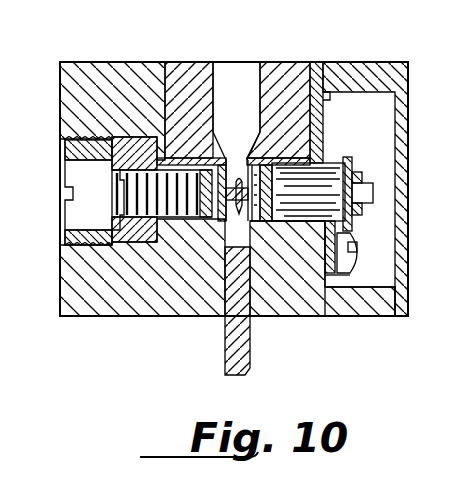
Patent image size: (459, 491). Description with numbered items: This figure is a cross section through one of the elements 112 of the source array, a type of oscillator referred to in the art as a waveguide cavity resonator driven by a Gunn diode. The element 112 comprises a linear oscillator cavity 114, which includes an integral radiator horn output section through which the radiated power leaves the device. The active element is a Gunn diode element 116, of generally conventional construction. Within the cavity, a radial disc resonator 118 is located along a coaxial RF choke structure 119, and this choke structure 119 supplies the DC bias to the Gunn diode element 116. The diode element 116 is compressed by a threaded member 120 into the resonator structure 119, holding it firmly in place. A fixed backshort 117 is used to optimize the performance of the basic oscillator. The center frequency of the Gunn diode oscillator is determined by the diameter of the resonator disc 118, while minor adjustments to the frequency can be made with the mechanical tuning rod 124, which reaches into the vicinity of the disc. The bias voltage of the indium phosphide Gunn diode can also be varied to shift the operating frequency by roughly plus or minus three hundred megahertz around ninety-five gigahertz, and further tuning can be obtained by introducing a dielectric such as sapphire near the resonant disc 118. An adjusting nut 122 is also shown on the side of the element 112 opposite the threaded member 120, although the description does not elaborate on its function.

The element 112 is at (392, 42).
The linear oscillator cavity 114 is at (247, 75).
The Gunn diode element 116 is at (213, 214).
The fixed backshort 117 is at (243, 374).
The radial disc resonator 118 is at (256, 240).
The coaxial RF choke structure 119 is at (237, 183).
The threaded member 120 is at (182, 190).
The adjusting nut 122 is at (367, 178).
The mechanical tuning rod 124 is at (233, 222).